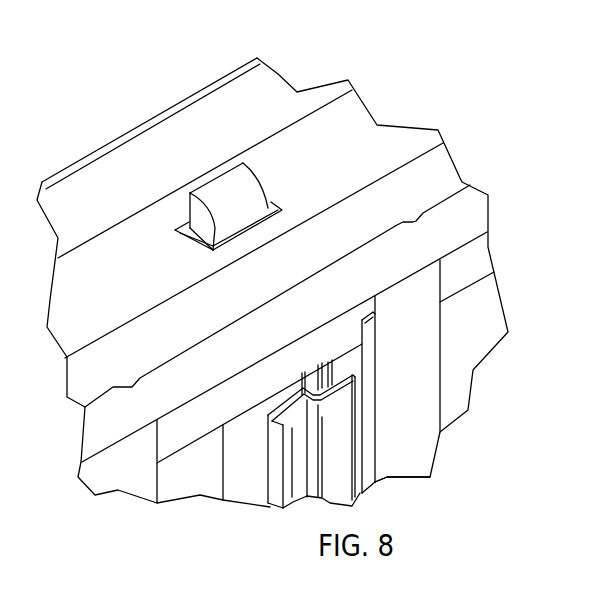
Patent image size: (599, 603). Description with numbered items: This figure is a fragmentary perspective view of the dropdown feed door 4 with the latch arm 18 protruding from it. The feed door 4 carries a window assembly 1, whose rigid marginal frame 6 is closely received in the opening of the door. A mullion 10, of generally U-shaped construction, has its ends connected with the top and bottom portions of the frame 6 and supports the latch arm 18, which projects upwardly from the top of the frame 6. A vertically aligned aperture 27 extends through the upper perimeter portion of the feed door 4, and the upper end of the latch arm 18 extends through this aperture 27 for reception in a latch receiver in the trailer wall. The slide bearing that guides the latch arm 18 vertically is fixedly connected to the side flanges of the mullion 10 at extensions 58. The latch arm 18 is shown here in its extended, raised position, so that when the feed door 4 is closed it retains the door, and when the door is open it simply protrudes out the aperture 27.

The window assembly 1 is at (478, 376).
The dropdown feed door 4 is at (236, 64).
The marginal frame 6 is at (145, 235).
The mullion 10 is at (407, 480).
The latch arm 18 is at (223, 187).
The aperture 27 is at (270, 202).
The extensions 58 is at (427, 438).